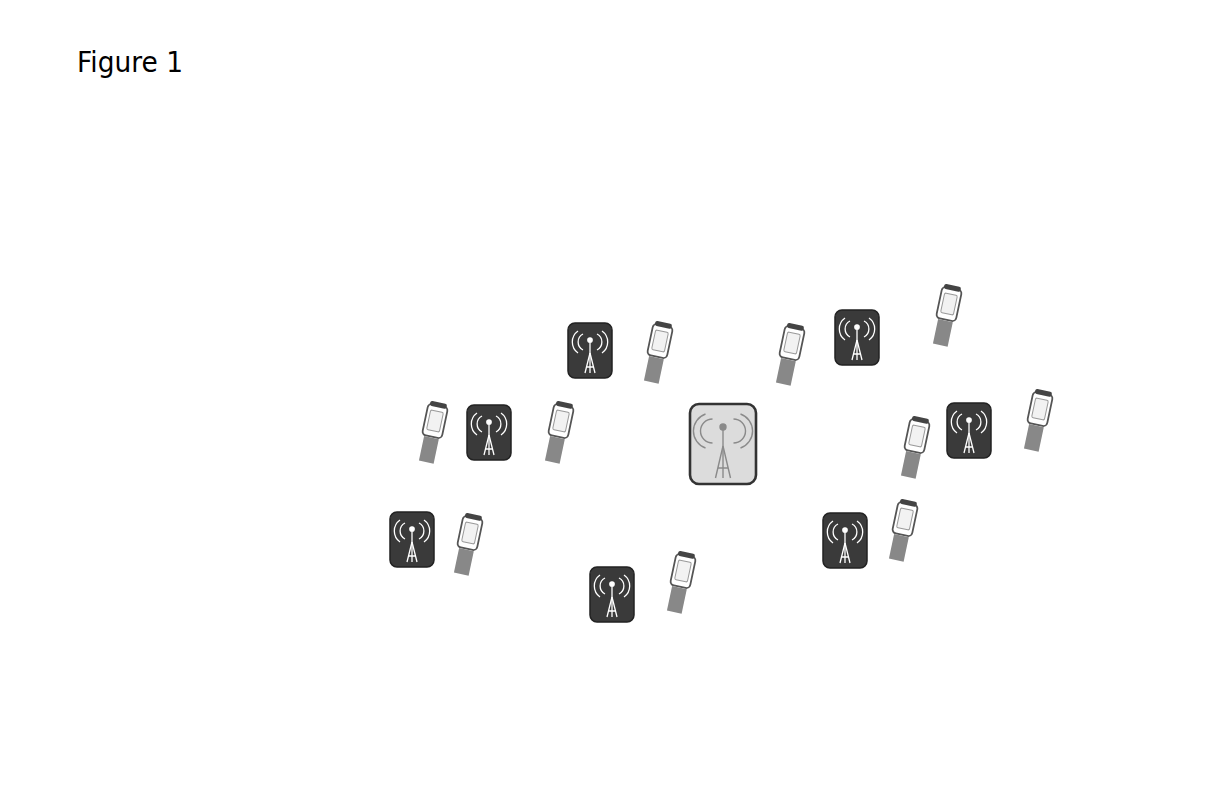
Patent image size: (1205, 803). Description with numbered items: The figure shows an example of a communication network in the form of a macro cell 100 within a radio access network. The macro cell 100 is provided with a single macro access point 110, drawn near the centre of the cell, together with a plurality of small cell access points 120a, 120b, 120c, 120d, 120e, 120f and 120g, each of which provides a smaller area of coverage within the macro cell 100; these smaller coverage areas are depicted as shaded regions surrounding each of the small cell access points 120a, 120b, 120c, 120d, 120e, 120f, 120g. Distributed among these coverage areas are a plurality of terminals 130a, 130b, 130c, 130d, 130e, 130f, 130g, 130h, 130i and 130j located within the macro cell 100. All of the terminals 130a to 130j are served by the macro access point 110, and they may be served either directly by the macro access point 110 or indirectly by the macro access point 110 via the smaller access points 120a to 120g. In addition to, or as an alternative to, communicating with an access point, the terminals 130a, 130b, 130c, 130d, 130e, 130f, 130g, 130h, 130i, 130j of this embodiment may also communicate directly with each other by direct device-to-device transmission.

The macro cell 100 is at (292, 308).
The macro access point 110 is at (723, 403).
The small cell access point 120a is at (577, 323).
The small cell access point 120b is at (473, 407).
The small cell access point 120c is at (400, 512).
The small cell access point 120d is at (613, 622).
The small cell access point 120e is at (853, 568).
The small cell access point 120f is at (987, 407).
The small cell access point 120g is at (892, 308).
The terminal 130a is at (662, 325).
The terminal 130b is at (562, 447).
The terminal 130c is at (427, 428).
The terminal 130d is at (462, 573).
The terminal 130e is at (687, 610).
The terminal 130f is at (925, 555).
The terminal 130g is at (910, 473).
The terminal 130h is at (1050, 408).
The terminal 130i is at (958, 290).
The terminal 130j is at (792, 327).